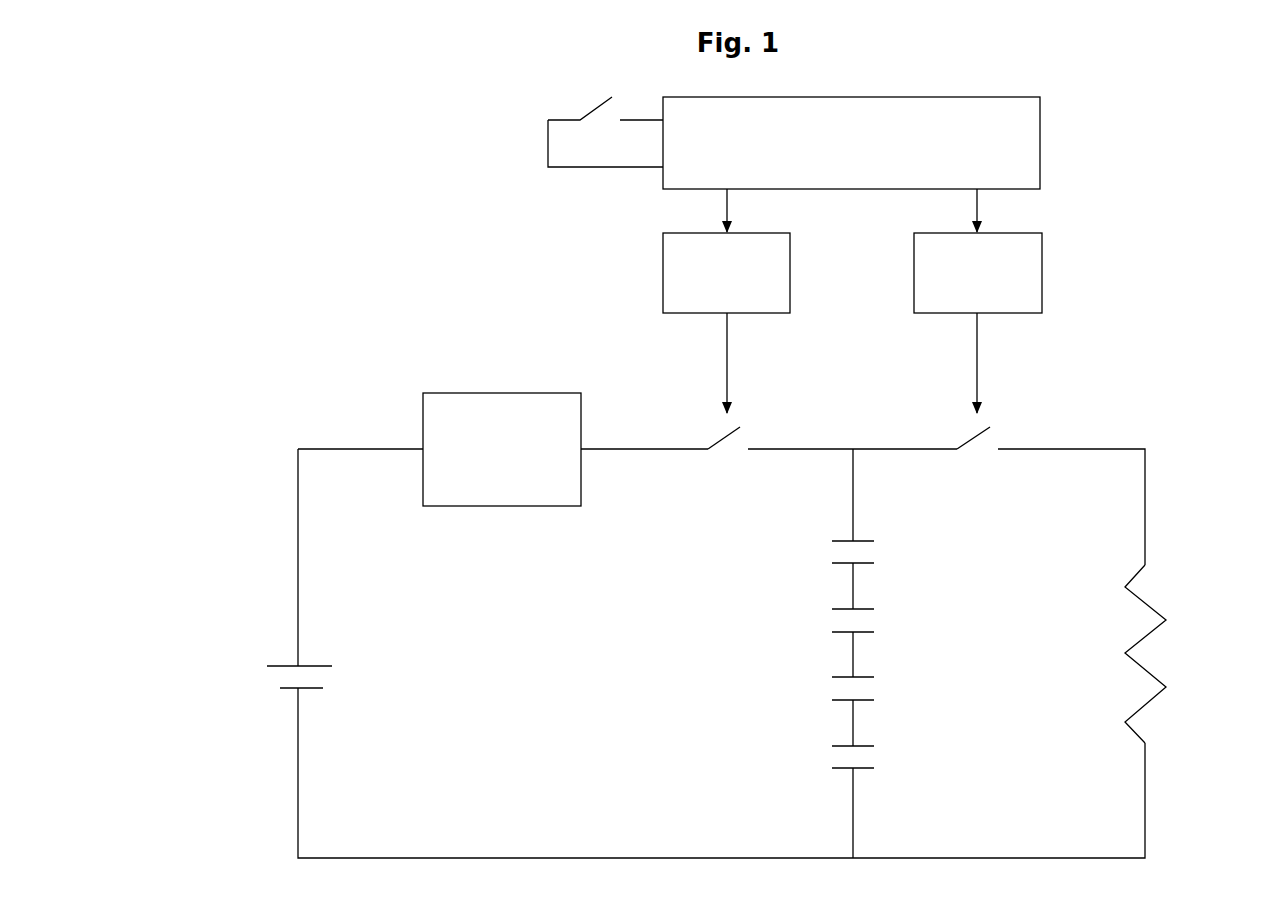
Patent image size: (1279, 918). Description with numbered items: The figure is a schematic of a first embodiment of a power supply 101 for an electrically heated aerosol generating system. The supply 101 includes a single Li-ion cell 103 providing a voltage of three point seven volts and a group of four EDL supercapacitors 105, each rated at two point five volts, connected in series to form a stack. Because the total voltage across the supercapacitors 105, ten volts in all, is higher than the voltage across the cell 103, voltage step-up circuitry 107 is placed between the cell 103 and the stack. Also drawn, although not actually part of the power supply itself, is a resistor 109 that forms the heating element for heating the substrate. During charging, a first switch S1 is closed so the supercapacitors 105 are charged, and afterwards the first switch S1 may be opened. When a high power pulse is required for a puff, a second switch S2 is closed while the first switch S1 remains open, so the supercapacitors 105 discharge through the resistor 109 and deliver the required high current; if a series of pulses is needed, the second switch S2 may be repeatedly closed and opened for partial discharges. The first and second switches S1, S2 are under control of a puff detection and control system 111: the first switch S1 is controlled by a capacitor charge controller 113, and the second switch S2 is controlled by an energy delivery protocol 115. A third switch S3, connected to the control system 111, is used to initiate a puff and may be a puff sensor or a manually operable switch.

The power supply 101 is at (319, 326).
The Li-ion cell 103 is at (258, 665).
The EDL supercapacitors 105 is at (800, 552).
The voltage step-up circuitry 107 is at (502, 449).
The resistor 109 is at (1178, 608).
The puff detection and control system 111 is at (851, 164).
The capacitor charge controller 113 is at (726, 323).
The energy delivery protocol 115 is at (978, 323).
The first switch S1 is at (712, 427).
The second switch S2 is at (959, 427).
The third switch S3 is at (605, 120).